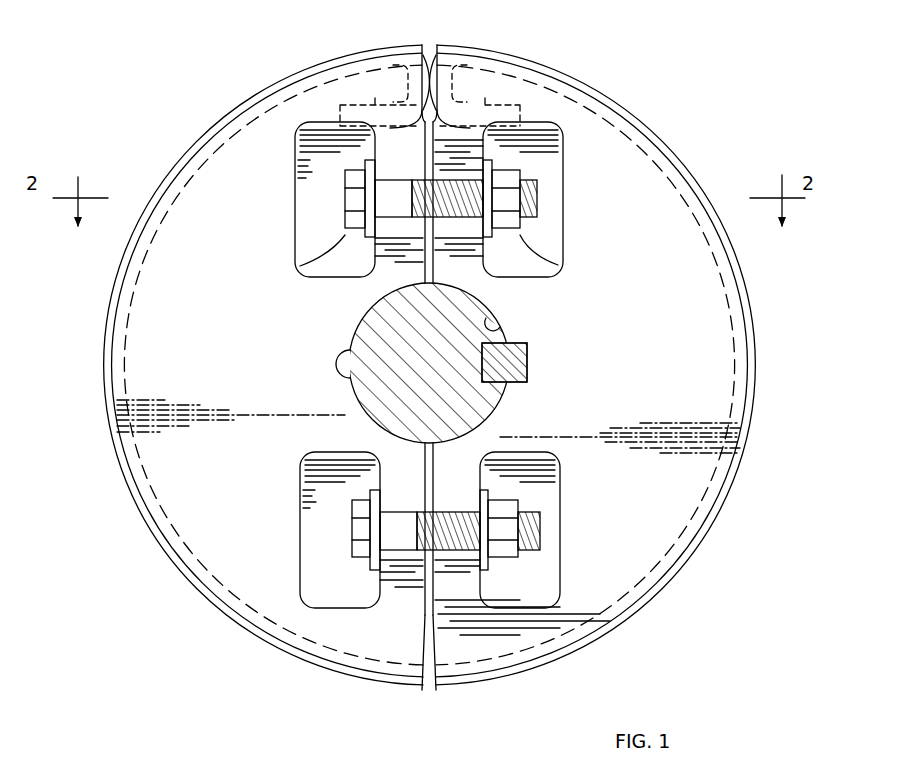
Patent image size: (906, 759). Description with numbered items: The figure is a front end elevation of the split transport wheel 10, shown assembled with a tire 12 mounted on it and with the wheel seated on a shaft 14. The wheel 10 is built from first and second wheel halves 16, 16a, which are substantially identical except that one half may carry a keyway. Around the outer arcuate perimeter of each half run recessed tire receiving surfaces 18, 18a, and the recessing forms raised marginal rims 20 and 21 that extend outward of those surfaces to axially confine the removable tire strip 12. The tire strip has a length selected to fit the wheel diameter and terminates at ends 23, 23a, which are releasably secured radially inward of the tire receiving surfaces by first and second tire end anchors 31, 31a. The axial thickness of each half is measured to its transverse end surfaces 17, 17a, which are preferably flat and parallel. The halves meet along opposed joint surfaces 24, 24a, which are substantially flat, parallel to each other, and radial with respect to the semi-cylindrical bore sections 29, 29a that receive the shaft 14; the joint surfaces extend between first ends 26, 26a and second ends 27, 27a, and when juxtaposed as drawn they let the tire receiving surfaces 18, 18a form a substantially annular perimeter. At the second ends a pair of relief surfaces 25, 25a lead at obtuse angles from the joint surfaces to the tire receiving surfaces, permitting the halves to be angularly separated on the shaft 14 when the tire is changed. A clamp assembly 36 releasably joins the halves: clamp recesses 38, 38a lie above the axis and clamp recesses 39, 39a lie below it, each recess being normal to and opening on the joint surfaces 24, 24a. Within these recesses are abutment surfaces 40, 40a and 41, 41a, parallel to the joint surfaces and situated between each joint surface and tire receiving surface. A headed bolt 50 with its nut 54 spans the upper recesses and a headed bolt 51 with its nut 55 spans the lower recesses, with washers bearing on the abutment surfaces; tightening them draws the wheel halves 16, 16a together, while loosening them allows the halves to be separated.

The split transport wheel 10 is at (706, 52).
The tire 12 is at (672, 138).
The shaft 14 is at (490, 395).
The first wheel half 16 is at (707, 330).
The second wheel half 16a is at (147, 323).
The transverse end surface 17 is at (633, 380).
The transverse end surface 17a is at (231, 380).
The tire receiving surface 18 is at (560, 655).
The tire receiving surface 18a is at (266, 618).
The raised marginal rim 20 is at (145, 490).
The raised marginal rim 21 is at (725, 488).
The tire strip end 23 is at (566, 67).
The tire strip end 23a is at (336, 79).
The joint surface 24 is at (440, 236).
The joint surface 24a is at (423, 282).
The relief surface 25 is at (436, 650).
The relief surface 25a is at (424, 652).
The first end of joint surface 26 is at (440, 52).
The first end of joint surface 26a is at (419, 52).
The second end of joint surface 27 is at (437, 688).
The second end of joint surface 27a is at (421, 688).
The bore section 29 is at (493, 320).
The bore section 29a is at (352, 366).
The first tire end anchor 31 is at (464, 79).
The second tire end anchor 31a is at (396, 79).
The clamp assembly 36 is at (560, 193).
The clamp recess 38 is at (545, 270).
The clamp recess 38a is at (322, 186).
The clamp recess 39 is at (543, 498).
The clamp recess 39a is at (325, 545).
The abutment surface 40 is at (490, 250).
The abutment surface 40a is at (368, 255).
The abutment surface 41 is at (488, 586).
The abutment surface 41a is at (378, 572).
The headed bolt 50 is at (355, 205).
The headed bolt 51 is at (360, 528).
The nut 54 is at (518, 222).
The nut 55 is at (515, 550).